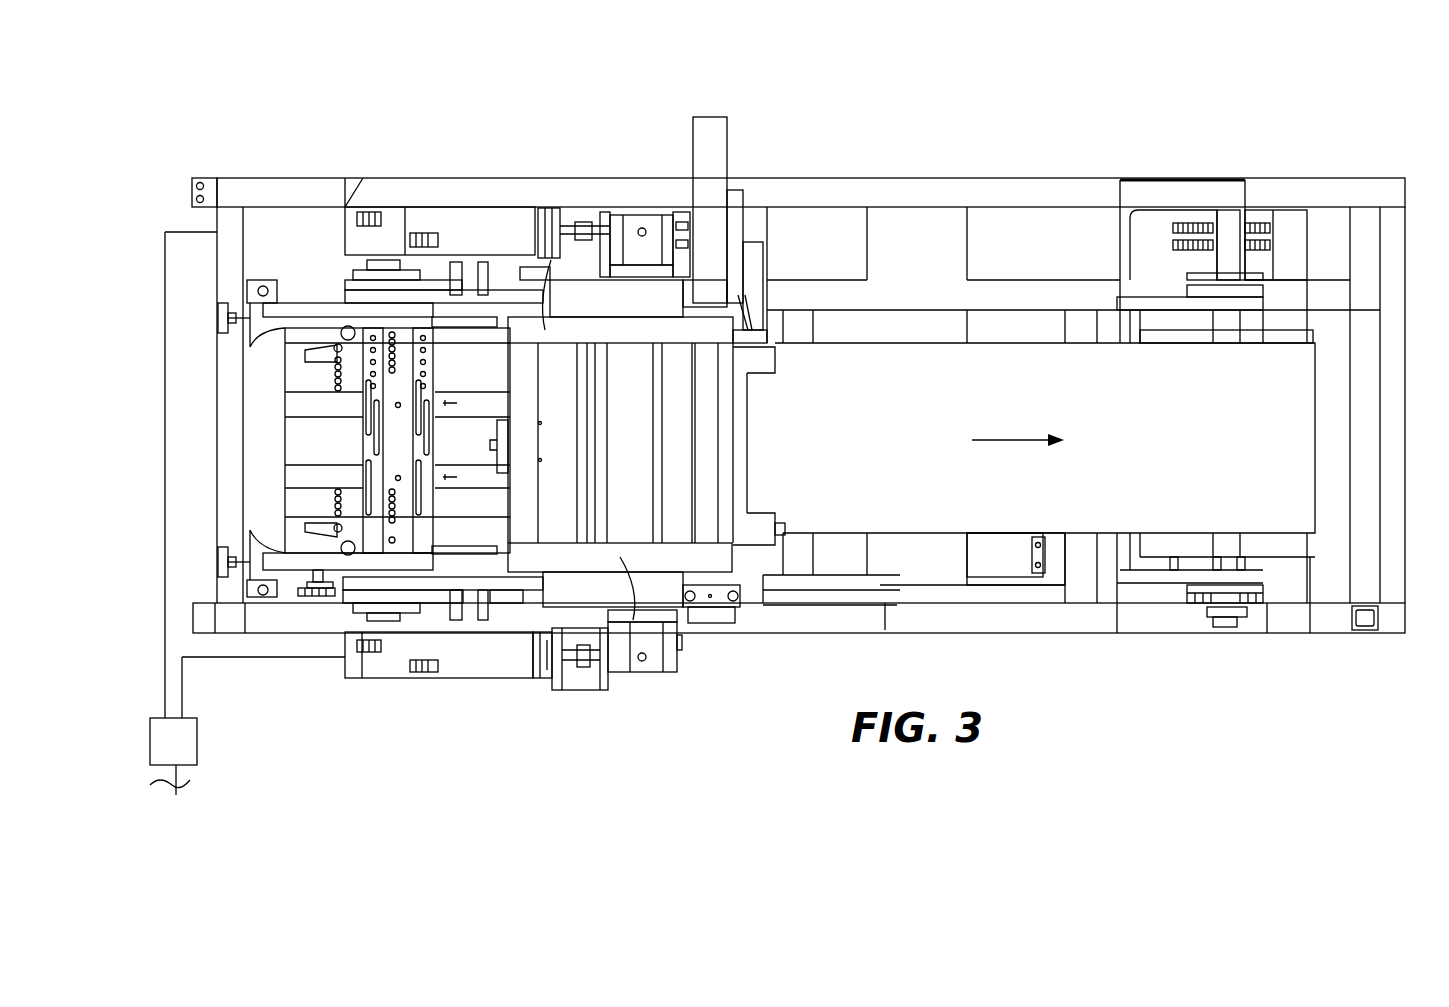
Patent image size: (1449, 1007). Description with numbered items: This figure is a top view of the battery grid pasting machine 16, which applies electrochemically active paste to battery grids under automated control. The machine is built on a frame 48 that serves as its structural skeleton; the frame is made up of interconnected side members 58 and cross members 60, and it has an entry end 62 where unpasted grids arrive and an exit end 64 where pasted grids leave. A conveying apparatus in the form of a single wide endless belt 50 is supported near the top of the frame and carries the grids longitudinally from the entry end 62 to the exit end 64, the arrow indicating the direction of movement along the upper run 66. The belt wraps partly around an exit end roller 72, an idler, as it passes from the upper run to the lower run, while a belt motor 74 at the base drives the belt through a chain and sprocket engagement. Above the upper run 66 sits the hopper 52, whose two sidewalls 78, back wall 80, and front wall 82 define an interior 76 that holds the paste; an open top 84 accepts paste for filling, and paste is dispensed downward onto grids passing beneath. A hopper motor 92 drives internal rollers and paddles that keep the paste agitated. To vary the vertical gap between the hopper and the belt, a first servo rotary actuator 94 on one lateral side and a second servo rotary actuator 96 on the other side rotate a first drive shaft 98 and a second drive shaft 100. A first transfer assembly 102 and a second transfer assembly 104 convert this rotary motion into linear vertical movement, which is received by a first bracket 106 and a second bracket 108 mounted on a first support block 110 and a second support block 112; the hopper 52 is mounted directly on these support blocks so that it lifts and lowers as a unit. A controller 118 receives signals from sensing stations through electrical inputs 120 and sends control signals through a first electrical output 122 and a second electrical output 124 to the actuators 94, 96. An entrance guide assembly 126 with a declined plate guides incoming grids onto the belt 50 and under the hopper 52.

The battery grid pasting machine 16 is at (1198, 139).
The frame 48 is at (908, 180).
The belt 50 is at (900, 345).
The hopper 52 is at (736, 433).
The side members 58 is at (1293, 620).
The cross members 60 is at (228, 495).
The entry end 62 is at (216, 374).
The exit end 64 is at (1383, 443).
The upper run 66 is at (900, 510).
The exit end roller 72 is at (1180, 547).
The belt motor 74 is at (682, 225).
The interior 76 is at (645, 455).
The sidewalls 78 is at (551, 260).
The back wall 80 is at (730, 387).
The front wall 82 is at (520, 450).
The open top 84 is at (720, 512).
The hopper motor 92 is at (1262, 225).
The first servo rotary actuator 94 is at (512, 683).
The second servo rotary actuator 96 is at (452, 207).
The first drive shaft 98 is at (572, 665).
The second drive shaft 100 is at (565, 225).
The first transfer assembly 102 is at (648, 680).
The second transfer assembly 104 is at (640, 207).
The first bracket 106 is at (650, 640).
The second bracket 108 is at (647, 245).
The first support block 110 is at (565, 588).
The second support block 112 is at (660, 302).
The controller 118 is at (186, 770).
The electrical inputs 120 is at (188, 800).
The first electrical output 122 is at (260, 657).
The second electrical output 124 is at (165, 470).
The entrance guide assembly 126 is at (315, 353).